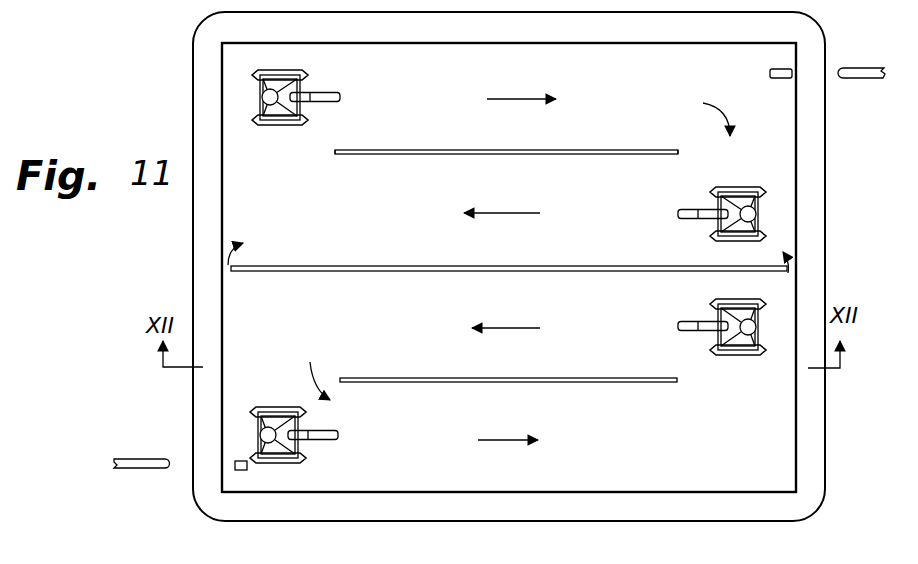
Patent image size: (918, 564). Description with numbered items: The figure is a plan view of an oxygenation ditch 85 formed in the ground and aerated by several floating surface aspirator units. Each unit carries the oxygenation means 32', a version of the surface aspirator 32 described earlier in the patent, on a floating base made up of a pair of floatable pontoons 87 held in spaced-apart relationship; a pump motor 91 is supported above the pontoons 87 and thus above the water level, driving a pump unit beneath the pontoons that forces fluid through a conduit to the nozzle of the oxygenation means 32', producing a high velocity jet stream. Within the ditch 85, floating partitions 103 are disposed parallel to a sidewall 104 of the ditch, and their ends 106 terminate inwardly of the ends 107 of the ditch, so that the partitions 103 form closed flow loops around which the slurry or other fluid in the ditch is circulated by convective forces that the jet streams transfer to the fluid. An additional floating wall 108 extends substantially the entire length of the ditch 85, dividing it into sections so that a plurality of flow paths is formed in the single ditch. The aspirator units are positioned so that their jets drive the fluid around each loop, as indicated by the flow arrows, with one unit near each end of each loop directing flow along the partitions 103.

The oxygenation ditch 85 is at (238, 61).
The floatable pontoon 87 is at (278, 71).
The pump motor 91 is at (264, 97).
The oxygenation means 32' is at (509, 206).
The surface aspirator 32 is at (325, 447).
The floating partition 103 is at (418, 156).
The sidewall 104 is at (486, 44).
The partition end 106 is at (336, 155).
The ditch end 107 is at (222, 213).
The additional floating wall 108 is at (288, 272).